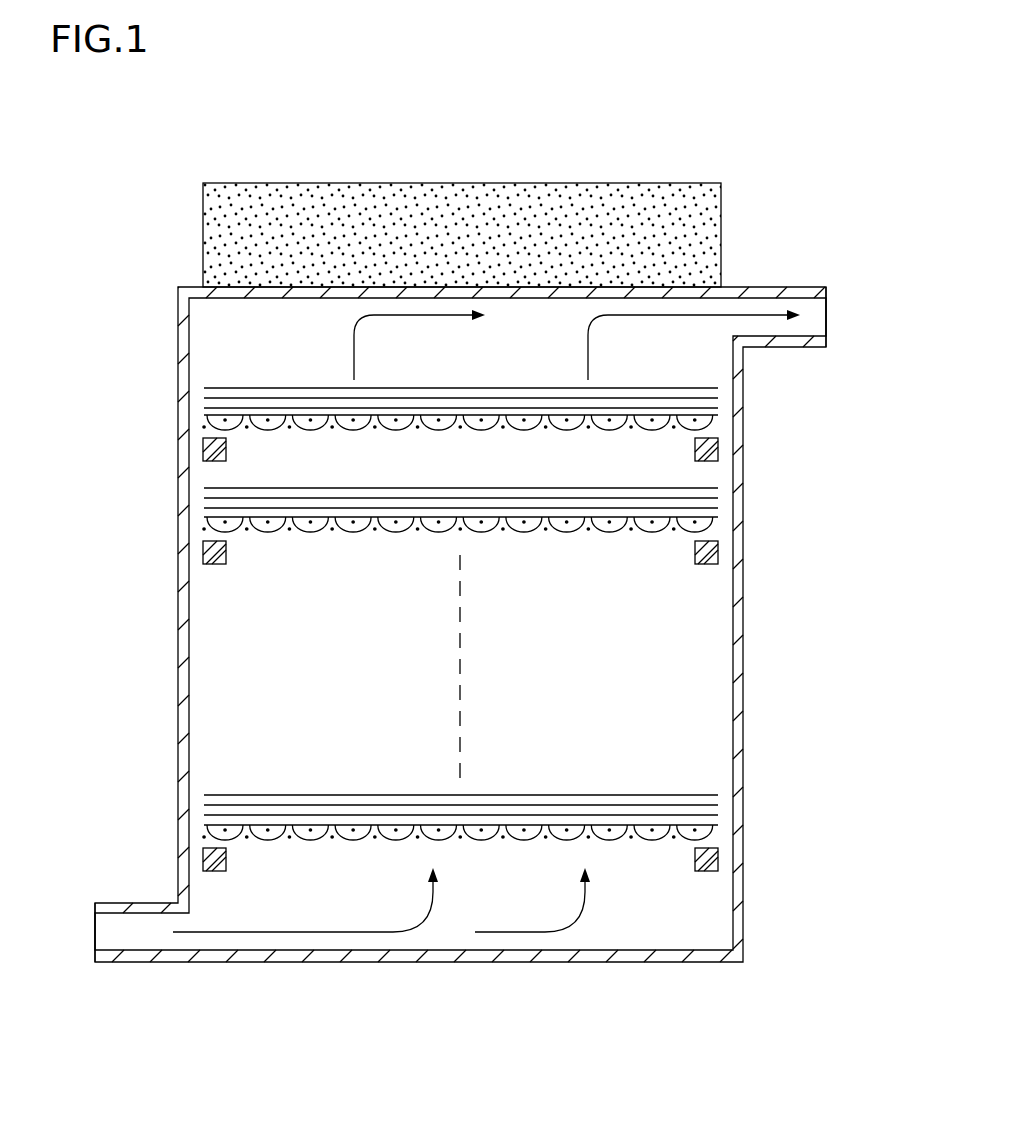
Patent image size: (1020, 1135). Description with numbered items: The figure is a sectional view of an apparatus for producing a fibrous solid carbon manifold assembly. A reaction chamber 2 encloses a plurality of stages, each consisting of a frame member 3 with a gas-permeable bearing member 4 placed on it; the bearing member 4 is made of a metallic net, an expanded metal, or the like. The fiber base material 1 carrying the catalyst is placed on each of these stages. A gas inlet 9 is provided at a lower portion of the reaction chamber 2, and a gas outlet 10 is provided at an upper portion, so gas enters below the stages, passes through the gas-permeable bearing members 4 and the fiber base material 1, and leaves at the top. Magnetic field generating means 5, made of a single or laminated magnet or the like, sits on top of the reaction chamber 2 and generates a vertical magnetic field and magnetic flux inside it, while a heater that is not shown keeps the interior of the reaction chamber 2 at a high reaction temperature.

The fiber base material 1 is at (235, 508).
The reaction chamber 2 is at (743, 677).
The frame member 3 is at (203, 555).
The gas-permeable bearing member 4 is at (312, 533).
The magnetic field generating means 5 is at (461, 198).
The gas inlet 9 is at (107, 930).
The gas outlet 10 is at (812, 319).